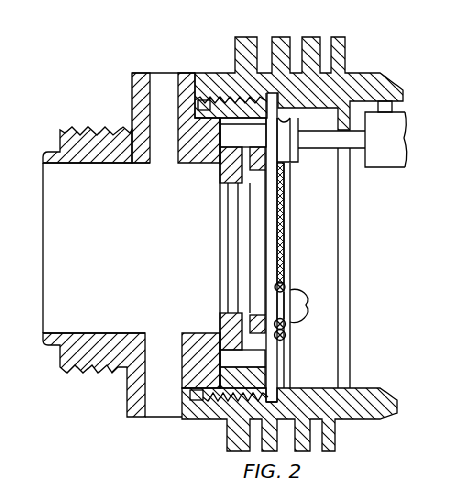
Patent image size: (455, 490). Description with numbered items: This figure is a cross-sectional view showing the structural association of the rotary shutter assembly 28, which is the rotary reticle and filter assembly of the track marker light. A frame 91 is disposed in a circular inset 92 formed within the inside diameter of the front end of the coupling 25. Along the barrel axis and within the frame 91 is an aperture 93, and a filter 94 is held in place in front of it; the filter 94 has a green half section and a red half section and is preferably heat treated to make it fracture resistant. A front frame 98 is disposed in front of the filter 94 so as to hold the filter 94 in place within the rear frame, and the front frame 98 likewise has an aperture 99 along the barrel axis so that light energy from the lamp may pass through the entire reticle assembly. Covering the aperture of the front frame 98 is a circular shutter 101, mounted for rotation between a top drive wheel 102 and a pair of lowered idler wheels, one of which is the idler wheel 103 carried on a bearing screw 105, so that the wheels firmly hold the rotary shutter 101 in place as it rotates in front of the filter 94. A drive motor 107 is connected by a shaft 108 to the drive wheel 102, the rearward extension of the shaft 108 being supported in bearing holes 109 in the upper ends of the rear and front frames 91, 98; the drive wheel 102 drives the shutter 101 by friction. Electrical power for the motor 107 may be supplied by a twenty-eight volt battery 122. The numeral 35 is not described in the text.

The coupling 25 is at (132, 88).
The rotary shutter assembly 28 is at (127, 247).
The housing cap 35 is at (150, 73).
The frame 91 is at (225, 176).
The circular inset 92 is at (217, 100).
The aperture 93 is at (233, 188).
The filter 94 is at (238, 238).
The front frame 98 is at (250, 258).
The aperture 99 is at (258, 322).
The circular shutter 101 is at (286, 244).
The top drive wheel 102 is at (297, 163).
The idler wheel 103 is at (284, 340).
The bearing screw 105 is at (306, 316).
The drive motor 107 is at (403, 104).
The shaft 108 is at (323, 150).
The bearing holes 109 is at (233, 131).
The battery 122 is at (384, 170).